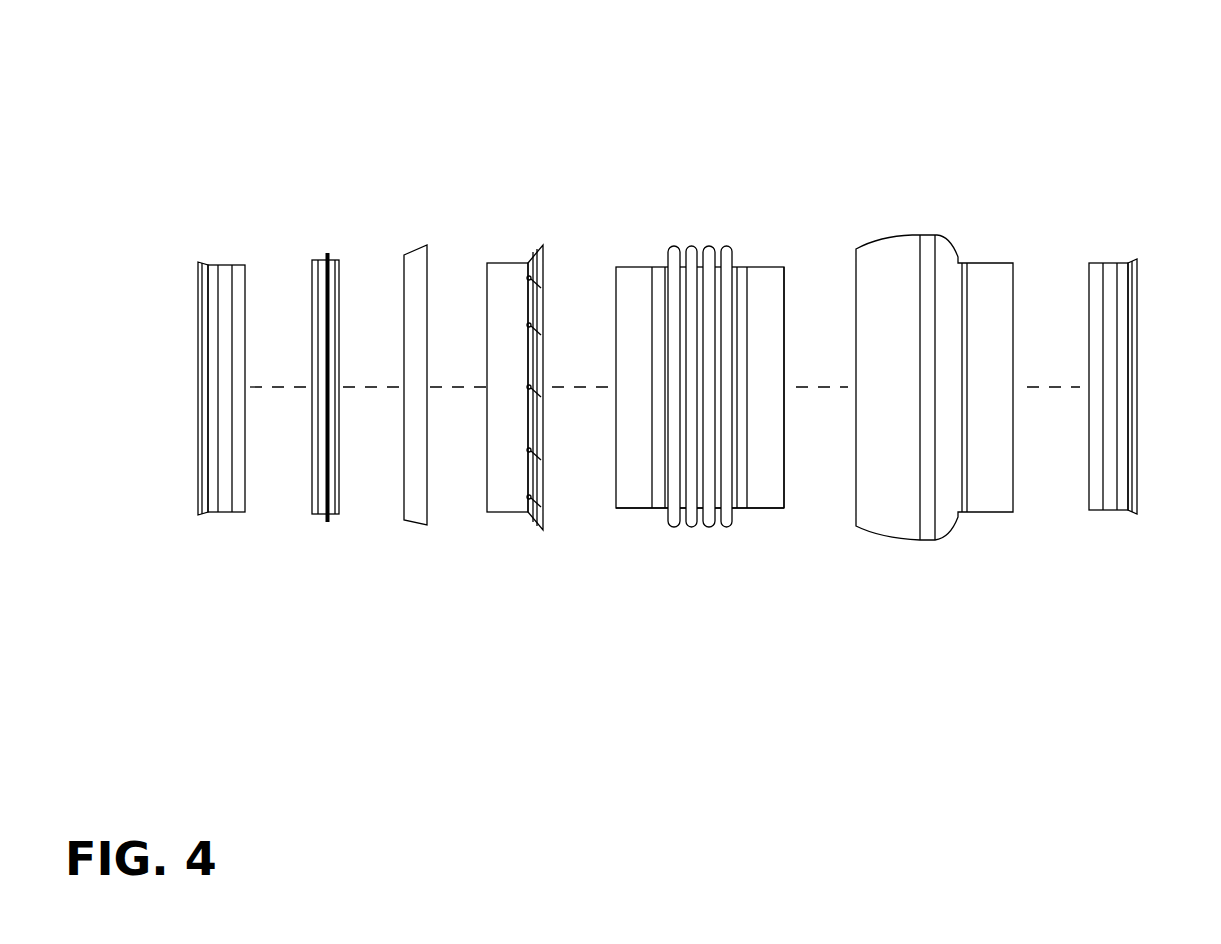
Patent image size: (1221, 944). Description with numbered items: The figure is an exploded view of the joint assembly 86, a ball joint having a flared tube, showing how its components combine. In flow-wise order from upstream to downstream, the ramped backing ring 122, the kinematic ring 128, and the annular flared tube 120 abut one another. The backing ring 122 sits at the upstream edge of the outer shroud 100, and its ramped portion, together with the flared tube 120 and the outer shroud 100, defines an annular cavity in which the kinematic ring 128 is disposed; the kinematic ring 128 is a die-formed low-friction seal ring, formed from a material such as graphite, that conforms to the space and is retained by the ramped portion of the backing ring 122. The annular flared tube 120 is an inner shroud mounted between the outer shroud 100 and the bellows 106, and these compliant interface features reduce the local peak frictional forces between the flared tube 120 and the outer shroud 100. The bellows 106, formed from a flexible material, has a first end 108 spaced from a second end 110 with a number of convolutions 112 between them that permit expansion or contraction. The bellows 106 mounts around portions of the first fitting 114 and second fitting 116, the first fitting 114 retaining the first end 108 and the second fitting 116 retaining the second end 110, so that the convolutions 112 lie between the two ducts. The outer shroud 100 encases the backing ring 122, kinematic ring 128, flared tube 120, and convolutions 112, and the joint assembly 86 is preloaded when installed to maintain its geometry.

The joint assembly 86 is at (214, 109).
The outer shroud 100 is at (912, 540).
The bellows 106 is at (772, 510).
The first end 108 is at (616, 280).
The second end 110 is at (784, 290).
The convolutions 112 is at (726, 527).
The first fitting 114 is at (225, 262).
The second fitting 116 is at (1099, 512).
The annular flared tube 120 is at (513, 513).
The ramped backing ring 122 is at (318, 258).
The kinematic ring 128 is at (415, 526).